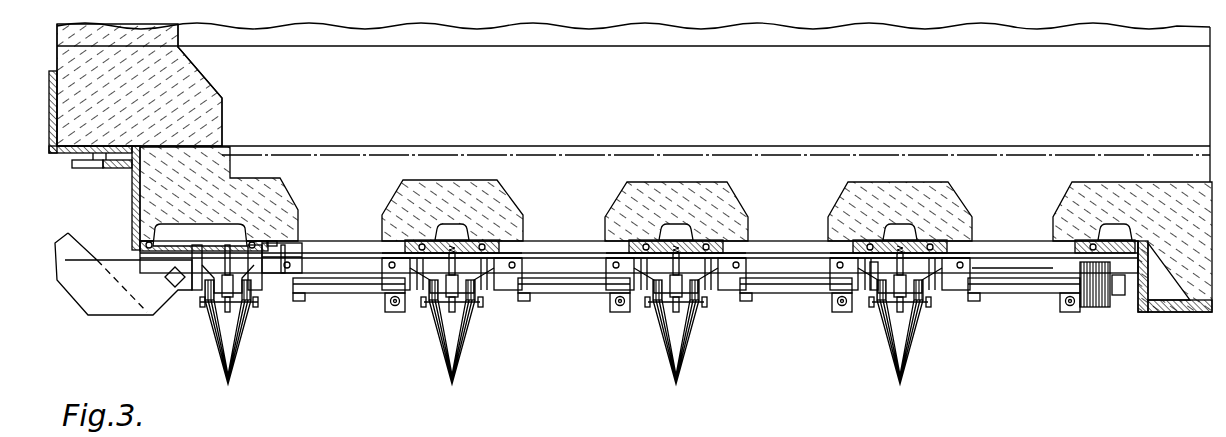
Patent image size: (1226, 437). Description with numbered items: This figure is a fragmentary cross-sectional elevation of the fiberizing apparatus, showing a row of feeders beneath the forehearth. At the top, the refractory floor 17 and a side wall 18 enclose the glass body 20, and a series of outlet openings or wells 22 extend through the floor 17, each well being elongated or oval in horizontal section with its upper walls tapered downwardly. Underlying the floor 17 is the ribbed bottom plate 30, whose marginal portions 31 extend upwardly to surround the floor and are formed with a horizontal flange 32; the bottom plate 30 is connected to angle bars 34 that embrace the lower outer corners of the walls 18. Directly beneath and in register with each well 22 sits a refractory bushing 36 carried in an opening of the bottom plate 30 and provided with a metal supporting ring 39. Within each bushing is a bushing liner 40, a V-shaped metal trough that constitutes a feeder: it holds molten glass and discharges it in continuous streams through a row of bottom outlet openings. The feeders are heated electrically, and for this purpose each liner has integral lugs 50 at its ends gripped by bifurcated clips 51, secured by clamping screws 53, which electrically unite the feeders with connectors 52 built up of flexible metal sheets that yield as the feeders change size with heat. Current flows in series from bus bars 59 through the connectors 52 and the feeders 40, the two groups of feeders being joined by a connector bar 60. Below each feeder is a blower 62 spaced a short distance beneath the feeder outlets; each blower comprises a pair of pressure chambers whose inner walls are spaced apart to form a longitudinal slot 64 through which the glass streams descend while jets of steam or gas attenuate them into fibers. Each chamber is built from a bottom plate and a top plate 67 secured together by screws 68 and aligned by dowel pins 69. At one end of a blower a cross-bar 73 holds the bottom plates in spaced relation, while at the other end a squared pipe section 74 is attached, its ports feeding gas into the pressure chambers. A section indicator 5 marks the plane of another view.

The section line 5 is at (1024, 416).
The floor 17 is at (915, 170).
The side walls 18 is at (78, 25).
The glass body 20 is at (470, 151).
The outlet openings or wells 22 is at (298, 213).
The bottom plate 30 is at (165, 250).
The marginal portions 31 is at (132, 203).
The horizontal flange 32 is at (116, 166).
The angle bars 34 is at (96, 155).
The refractory bushing 36 is at (283, 275).
The metal supporting ring 39 is at (270, 280).
The bushing liner 40 is at (339, 244).
The lugs 50 is at (963, 268).
The bifurcated clips 51 is at (914, 284).
The connectors 52 is at (236, 366).
The clamping screws 53 is at (736, 270).
The bus bars 59 is at (108, 306).
The connector bar 60 is at (1100, 303).
The blowers 62 is at (358, 293).
The longitudinal slot or passageway 64 is at (409, 434).
The top plate 67 is at (804, 432).
The screws 68 is at (860, 436).
The dowel pins 69 is at (971, 428).
The cross-bar 73 is at (525, 301).
The pipe section 74 is at (617, 303).